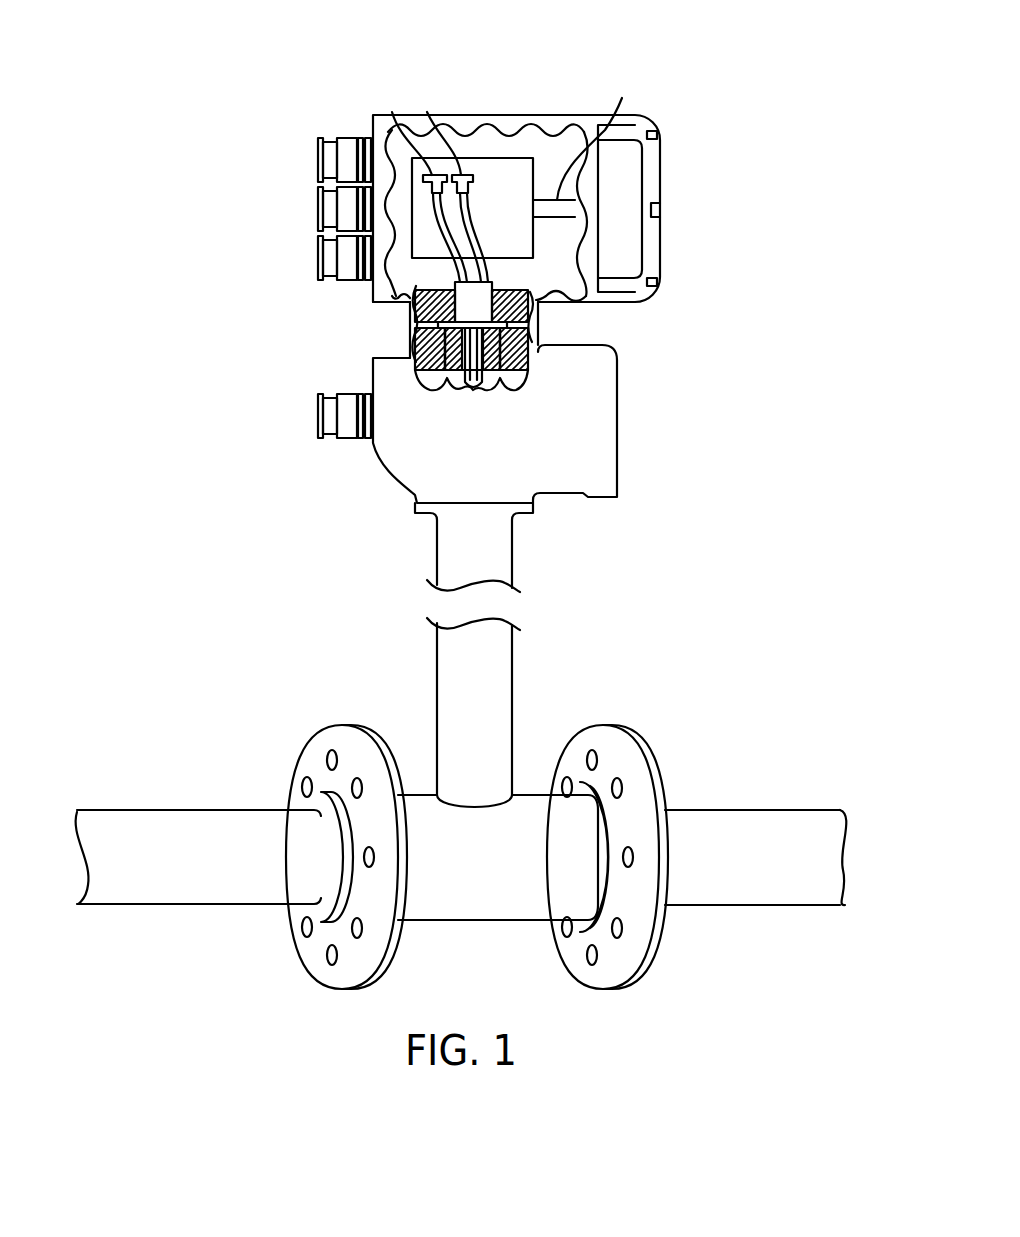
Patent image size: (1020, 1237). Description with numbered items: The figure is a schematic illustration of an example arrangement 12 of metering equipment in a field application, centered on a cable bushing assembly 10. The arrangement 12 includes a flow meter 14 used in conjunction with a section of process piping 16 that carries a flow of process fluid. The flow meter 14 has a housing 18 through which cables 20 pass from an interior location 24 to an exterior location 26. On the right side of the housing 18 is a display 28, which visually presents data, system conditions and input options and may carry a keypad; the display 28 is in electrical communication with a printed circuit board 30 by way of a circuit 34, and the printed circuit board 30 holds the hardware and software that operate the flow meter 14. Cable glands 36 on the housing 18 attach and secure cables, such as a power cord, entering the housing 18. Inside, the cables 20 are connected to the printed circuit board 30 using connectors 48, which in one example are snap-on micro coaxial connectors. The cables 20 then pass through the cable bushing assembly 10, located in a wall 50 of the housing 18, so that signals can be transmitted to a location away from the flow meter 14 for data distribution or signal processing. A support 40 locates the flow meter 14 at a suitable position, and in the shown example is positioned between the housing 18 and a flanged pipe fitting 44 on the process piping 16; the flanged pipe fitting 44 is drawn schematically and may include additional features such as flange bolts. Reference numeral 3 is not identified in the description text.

The sensor body 3 is at (617, 420).
The cable bushing assembly 10 is at (477, 345).
The arrangement 12 is at (256, 106).
The flow meter 14 is at (588, 74).
The process piping 16 is at (208, 905).
The housing 18 is at (560, 115).
The cables 20 is at (465, 207).
The interior location 24 is at (569, 253).
The exterior location 26 is at (665, 615).
The display 28 is at (660, 172).
The printed circuit board 30 is at (400, 306).
The circuit 34 is at (594, 136).
The cable glands 36 is at (318, 156).
The support 40 is at (512, 675).
The flanged pipe fitting 44 is at (478, 920).
The connectors 48 is at (392, 112).
The wall 50 is at (435, 326).